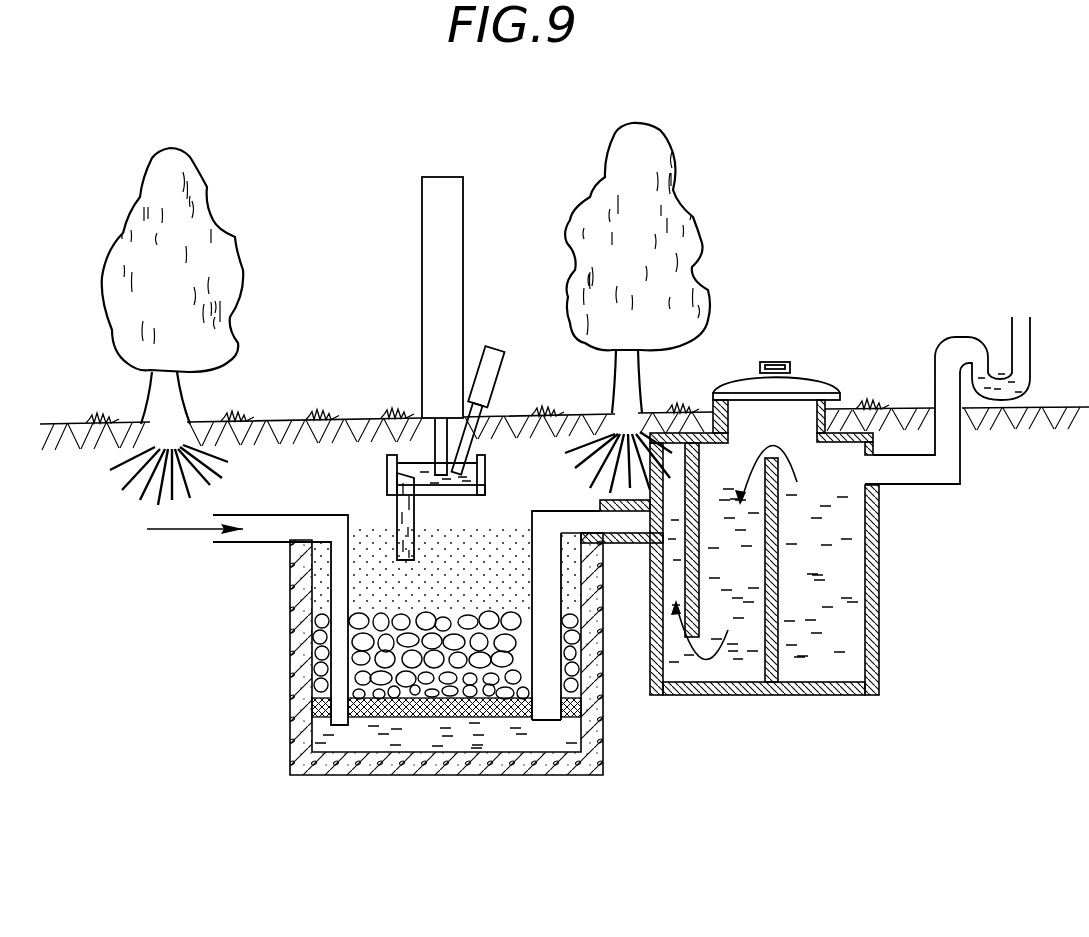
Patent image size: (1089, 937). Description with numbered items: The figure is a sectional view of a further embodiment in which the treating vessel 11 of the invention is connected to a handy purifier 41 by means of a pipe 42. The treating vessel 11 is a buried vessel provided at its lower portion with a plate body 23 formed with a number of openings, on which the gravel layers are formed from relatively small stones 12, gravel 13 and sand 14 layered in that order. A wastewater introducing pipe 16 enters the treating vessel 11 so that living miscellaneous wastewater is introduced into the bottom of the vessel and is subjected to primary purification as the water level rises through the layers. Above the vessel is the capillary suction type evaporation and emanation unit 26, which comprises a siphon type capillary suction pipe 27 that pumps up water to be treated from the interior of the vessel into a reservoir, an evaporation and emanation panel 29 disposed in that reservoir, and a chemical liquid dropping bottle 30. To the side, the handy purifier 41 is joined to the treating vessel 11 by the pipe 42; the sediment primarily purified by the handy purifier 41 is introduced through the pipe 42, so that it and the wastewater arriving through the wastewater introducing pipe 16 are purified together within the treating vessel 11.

The treating vessel 11 is at (517, 765).
The relatively small stones 12 is at (427, 715).
The gravel 13 is at (458, 613).
The sand 14 is at (367, 600).
The wastewater introducing pipe 16 is at (237, 543).
The plate body 23 is at (395, 715).
The capillary suction type evaporation and emanation unit 26 is at (475, 323).
The siphon type capillary suction pipe 27 is at (397, 528).
The evaporation and emanation panel 29 is at (457, 212).
The chemical liquid dropping bottle 30 is at (485, 388).
The handy purifier 41 is at (843, 695).
The pipe 42 is at (553, 660).